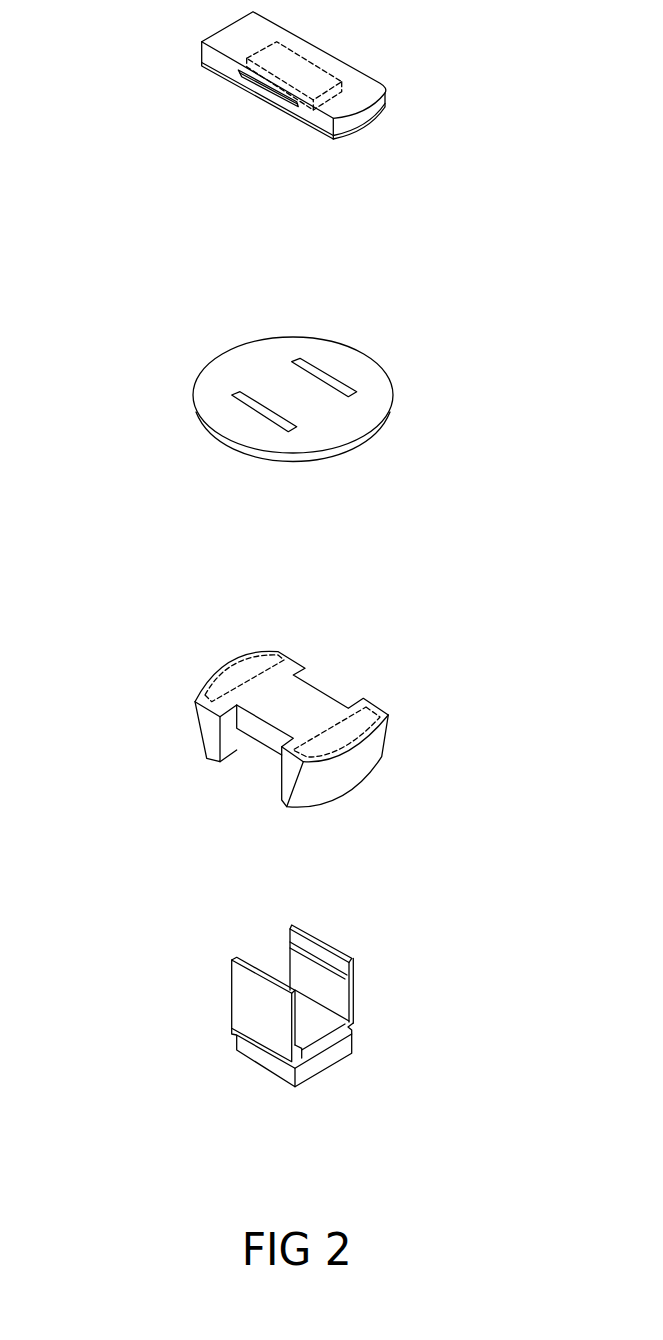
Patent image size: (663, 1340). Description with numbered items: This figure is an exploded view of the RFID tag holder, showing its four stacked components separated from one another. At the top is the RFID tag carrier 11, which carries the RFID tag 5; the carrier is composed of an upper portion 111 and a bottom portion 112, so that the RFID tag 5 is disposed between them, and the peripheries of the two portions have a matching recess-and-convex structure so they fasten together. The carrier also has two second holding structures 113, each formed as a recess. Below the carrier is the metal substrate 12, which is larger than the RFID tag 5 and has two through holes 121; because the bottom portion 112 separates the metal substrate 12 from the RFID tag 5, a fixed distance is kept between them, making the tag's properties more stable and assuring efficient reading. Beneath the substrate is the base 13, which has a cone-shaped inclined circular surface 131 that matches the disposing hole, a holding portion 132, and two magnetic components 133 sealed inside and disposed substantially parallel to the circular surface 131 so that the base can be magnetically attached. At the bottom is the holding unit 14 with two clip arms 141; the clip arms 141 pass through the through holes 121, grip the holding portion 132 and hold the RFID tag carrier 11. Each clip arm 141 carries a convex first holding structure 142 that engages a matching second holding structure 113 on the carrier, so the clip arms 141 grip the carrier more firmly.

The RFID tag 5 is at (303, 65).
The RFID tag carrier 11 is at (211, 75).
The upper portion 111 is at (212, 52).
The bottom portion 112 is at (210, 65).
The second holding structure 113 is at (248, 87).
The metal substrate 12 is at (279, 429).
The through hole 121 is at (323, 380).
The base 13 is at (325, 709).
The circular surface 131 is at (335, 778).
The holding portion 132 is at (278, 740).
The magnetic component 133 is at (238, 675).
The holding unit 14 is at (296, 1012).
The clip arm 141 is at (353, 963).
The first holding structure 142 is at (292, 940).